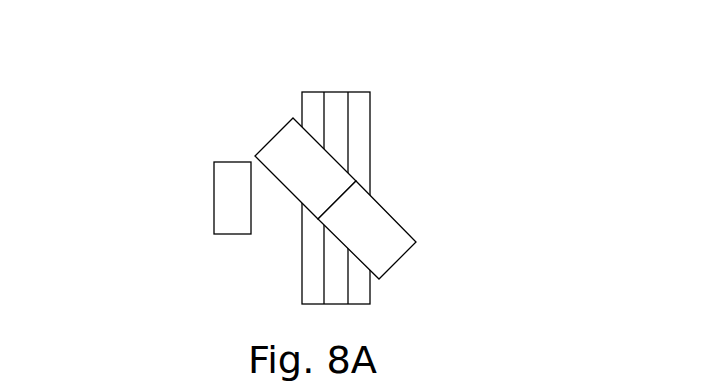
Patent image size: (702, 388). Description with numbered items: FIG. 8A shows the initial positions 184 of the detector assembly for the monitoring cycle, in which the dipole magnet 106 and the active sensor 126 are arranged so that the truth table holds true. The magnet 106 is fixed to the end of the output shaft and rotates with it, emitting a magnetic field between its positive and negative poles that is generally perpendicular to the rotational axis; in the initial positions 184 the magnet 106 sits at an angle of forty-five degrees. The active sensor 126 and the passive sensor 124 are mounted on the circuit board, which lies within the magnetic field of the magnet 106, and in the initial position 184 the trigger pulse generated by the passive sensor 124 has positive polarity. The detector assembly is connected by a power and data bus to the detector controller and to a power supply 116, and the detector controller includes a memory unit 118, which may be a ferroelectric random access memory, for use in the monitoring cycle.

The initial positions 184 is at (245, 47).
The active sensor 126 is at (335, 92).
The dipole magnet 106 is at (382, 212).
The power supply 116 is at (278, 190).
The memory unit 118 is at (395, 268).
The passive sensor 124 is at (230, 162).